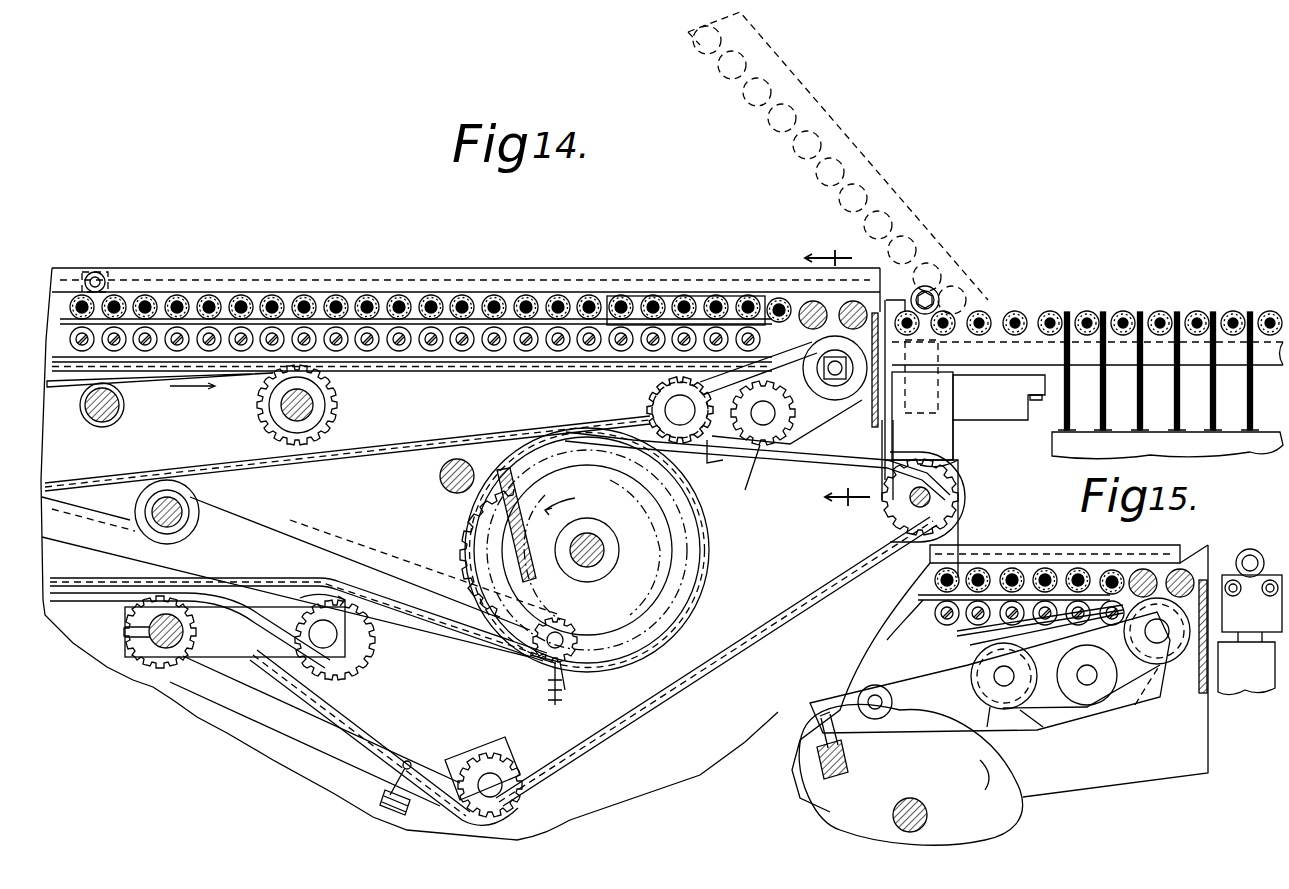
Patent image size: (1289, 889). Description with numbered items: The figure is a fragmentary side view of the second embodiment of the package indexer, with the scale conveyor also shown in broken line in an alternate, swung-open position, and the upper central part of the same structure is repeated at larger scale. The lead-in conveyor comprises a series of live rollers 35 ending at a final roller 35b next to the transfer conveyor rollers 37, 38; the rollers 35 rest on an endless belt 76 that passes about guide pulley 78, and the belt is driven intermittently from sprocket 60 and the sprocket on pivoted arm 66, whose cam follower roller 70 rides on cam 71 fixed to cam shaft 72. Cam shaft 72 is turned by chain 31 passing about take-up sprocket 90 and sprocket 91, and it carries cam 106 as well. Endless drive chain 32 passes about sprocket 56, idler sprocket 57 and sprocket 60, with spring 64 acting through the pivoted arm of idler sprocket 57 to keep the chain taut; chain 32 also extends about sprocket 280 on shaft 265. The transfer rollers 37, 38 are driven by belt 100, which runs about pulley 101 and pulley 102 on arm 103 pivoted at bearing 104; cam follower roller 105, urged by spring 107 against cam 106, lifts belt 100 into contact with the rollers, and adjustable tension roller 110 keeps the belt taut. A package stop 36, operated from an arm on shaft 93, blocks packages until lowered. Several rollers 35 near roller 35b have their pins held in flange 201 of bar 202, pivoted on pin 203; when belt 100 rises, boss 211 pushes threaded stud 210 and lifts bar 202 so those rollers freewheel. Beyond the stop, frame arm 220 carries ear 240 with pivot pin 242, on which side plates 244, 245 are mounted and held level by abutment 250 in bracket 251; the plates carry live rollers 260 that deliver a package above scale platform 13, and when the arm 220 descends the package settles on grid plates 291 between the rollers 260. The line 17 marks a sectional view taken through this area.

In FIG. 14, the scale platform 13 is at (1212, 440).
In FIG. 14, the section line 17 is at (837, 372).
In FIG. 14, the chain 31 is at (708, 530).
In FIG. 14, the endless drive chain 32 is at (705, 712).
In FIG. 14, the live rollers 35 is at (272, 296).
In FIG. 15, the live rollers 35 is at (1030, 568).
In FIG. 14, the final roller 35b is at (775, 330).
In FIG. 14, the package stop 36 is at (898, 292).
In FIG. 14, the transfer conveyor roller 37 is at (812, 315).
In FIG. 15, the transfer conveyor roller 37 is at (1145, 568).
In FIG. 14, the transfer conveyor roller 38 is at (855, 302).
In FIG. 15, the transfer conveyor roller 38 is at (1185, 568).
In FIG. 14, the sprocket 56 is at (168, 668).
In FIG. 14, the idler sprocket 57 is at (500, 755).
In FIG. 14, the sprocket 60 is at (335, 410).
In FIG. 14, the spring 64 is at (385, 795).
In FIG. 14, the arm 66 is at (290, 530).
In FIG. 14, the cam follower roller 70 is at (570, 668).
In FIG. 14, the cam 71 is at (601, 540).
In FIG. 14, the cam shaft 72 is at (588, 535).
In FIG. 15, the cam shaft 72 is at (968, 765).
In FIG. 14, the endless belt 76 is at (380, 330).
In FIG. 15, the endless belt 76 is at (993, 566).
In FIG. 14, the guide pulley 78 is at (720, 320).
In FIG. 15, the guide pulley 78 is at (1100, 575).
In FIG. 14, the take-up sprocket 90 is at (370, 655).
In FIG. 14, the sprocket 91 is at (470, 525).
In FIG. 14, the shaft 93 is at (280, 420).
In FIG. 14, the belt 100 is at (755, 450).
In FIG. 15, the belt 100 is at (1122, 705).
In FIG. 15, the pulley 101 is at (1010, 700).
In FIG. 14, the pulley 102 is at (860, 412).
In FIG. 15, the pulley 102 is at (1170, 665).
In FIG. 14, the arm 103 is at (585, 428).
In FIG. 15, the arm 103 is at (930, 680).
In FIG. 14, the pivot bearing 104 is at (655, 412).
In FIG. 15, the pivot bearing 104 is at (1030, 712).
In FIG. 14, the cam follower roller 105 is at (530, 428).
In FIG. 15, the cam follower roller 105 is at (875, 695).
In FIG. 14, the cam 106 is at (700, 586).
In FIG. 15, the cam 106 is at (985, 765).
In FIG. 14, the spring 107 is at (490, 510).
In FIG. 15, the spring 107 is at (848, 765).
In FIG. 14, the adjustable tension roller 110 is at (768, 450).
In FIG. 14, the flange 201 is at (660, 300).
In FIG. 15, the flange 201 is at (940, 572).
In FIG. 14, the bar 202 is at (548, 290).
In FIG. 15, the bar 202 is at (1072, 560).
In FIG. 14, the pivot pin 203 is at (97, 280).
In FIG. 14, the threaded adjustable stud 210 is at (835, 336).
In FIG. 15, the threaded adjustable stud 210 is at (1160, 600).
In FIG. 14, the boss 211 is at (928, 349).
In FIG. 15, the boss 211 is at (1148, 708).
In FIG. 14, the vertically-extending arm 220 is at (962, 462).
In FIG. 14, the ear 240 is at (922, 414).
In FIG. 14, the pivot pin 242 is at (930, 296).
In FIG. 15, the pivot pin 242 is at (1255, 560).
In FIG. 14, the side plate 244 is at (995, 355).
In FIG. 15, the side plate 245 is at (1250, 640).
In FIG. 14, the adjustable abutment 250 is at (1032, 402).
In FIG. 14, the bracket 251 is at (990, 425).
In FIG. 14, the live rollers 260 is at (1125, 312).
In FIG. 14, the shaft 265 is at (905, 497).
In FIG. 14, the sprocket 280 is at (885, 525).
In FIG. 14, the grids or plates 291 is at (1250, 312).